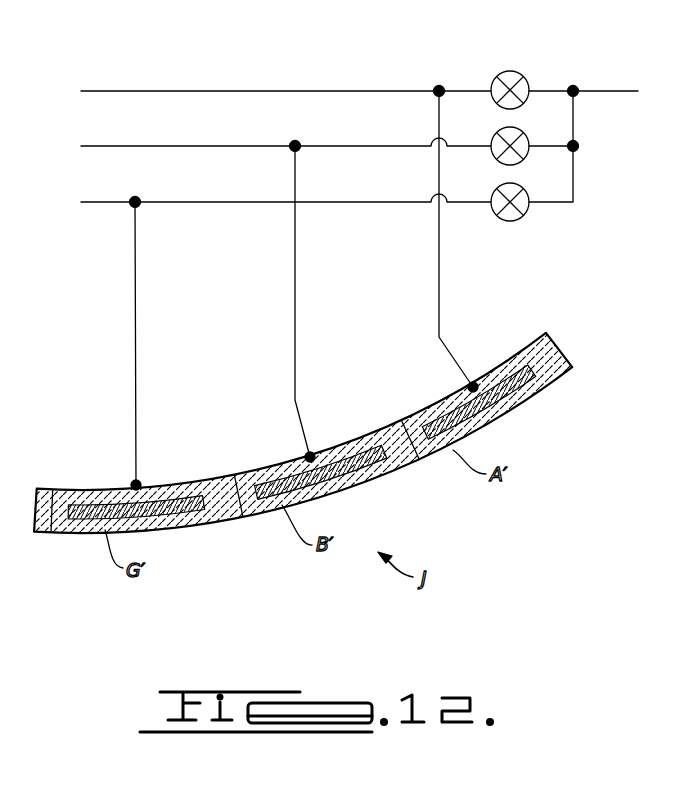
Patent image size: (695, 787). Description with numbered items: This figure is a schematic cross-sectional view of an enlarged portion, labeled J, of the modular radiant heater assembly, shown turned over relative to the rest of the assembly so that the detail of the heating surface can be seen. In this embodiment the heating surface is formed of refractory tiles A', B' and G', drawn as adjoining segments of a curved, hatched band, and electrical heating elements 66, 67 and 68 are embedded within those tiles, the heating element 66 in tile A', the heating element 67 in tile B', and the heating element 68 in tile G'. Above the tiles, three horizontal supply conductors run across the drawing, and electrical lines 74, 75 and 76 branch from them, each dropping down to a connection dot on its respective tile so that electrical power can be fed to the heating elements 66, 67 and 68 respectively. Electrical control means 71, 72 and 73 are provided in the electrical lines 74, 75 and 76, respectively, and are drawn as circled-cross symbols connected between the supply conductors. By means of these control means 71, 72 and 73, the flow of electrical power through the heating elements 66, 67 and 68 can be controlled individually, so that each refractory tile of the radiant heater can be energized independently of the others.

The electrical heating element 66 is at (527, 402).
The electrical heating element 67 is at (358, 478).
The electrical heating element 68 is at (192, 505).
The electrical control means 71 is at (522, 74).
The electrical control means 72 is at (526, 141).
The electrical control means 73 is at (522, 215).
The electrical line 74 is at (441, 301).
The electrical line 75 is at (297, 351).
The electrical line 76 is at (139, 396).